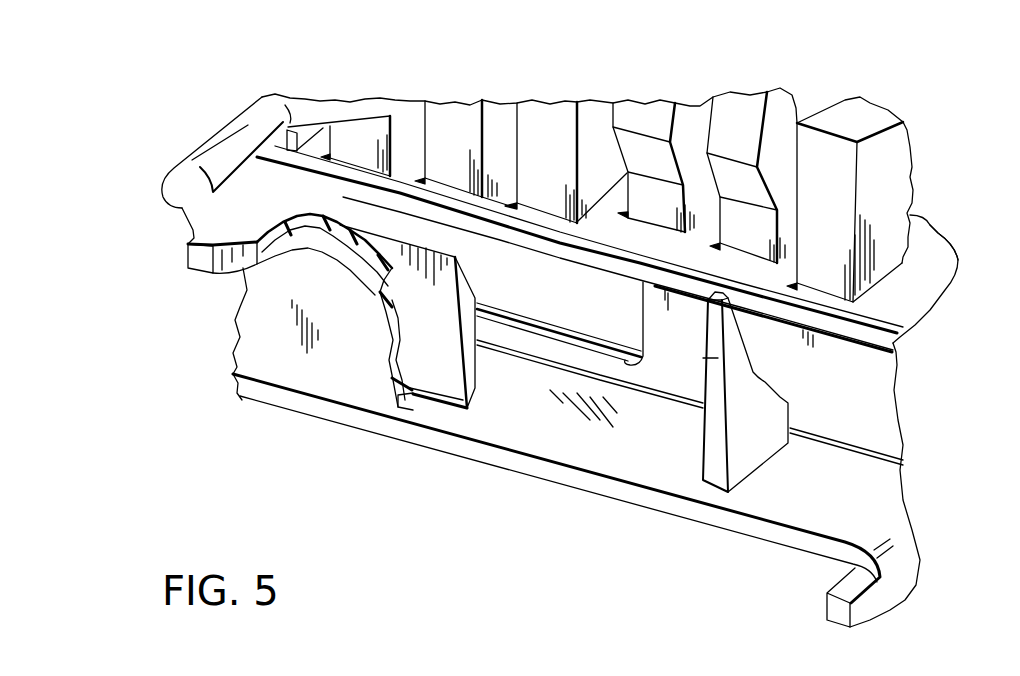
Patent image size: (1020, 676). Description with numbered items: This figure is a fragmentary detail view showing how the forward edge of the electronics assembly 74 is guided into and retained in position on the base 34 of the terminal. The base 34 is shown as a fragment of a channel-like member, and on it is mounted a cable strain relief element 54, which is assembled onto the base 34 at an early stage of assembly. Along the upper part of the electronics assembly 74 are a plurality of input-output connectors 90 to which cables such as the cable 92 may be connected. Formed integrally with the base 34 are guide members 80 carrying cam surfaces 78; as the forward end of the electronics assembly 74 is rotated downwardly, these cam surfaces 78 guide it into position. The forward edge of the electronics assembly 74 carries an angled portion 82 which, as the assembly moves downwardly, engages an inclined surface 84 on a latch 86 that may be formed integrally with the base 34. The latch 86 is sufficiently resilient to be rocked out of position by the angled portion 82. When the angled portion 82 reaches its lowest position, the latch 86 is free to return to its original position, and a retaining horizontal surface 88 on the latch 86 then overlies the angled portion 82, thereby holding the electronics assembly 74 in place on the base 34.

The base 34 is at (559, 480).
The cable strain relief element 54 is at (163, 223).
The electronics assembly 74 is at (942, 237).
The cam surfaces 78 is at (745, 362).
The guide members 80 is at (790, 416).
The angled portion 82 is at (553, 333).
The inclined surface 84 is at (472, 276).
The latch 86 is at (452, 383).
The retaining horizontal surface 88 is at (463, 303).
The input-output connectors 90 is at (468, 97).
The cable 92 is at (343, 94).